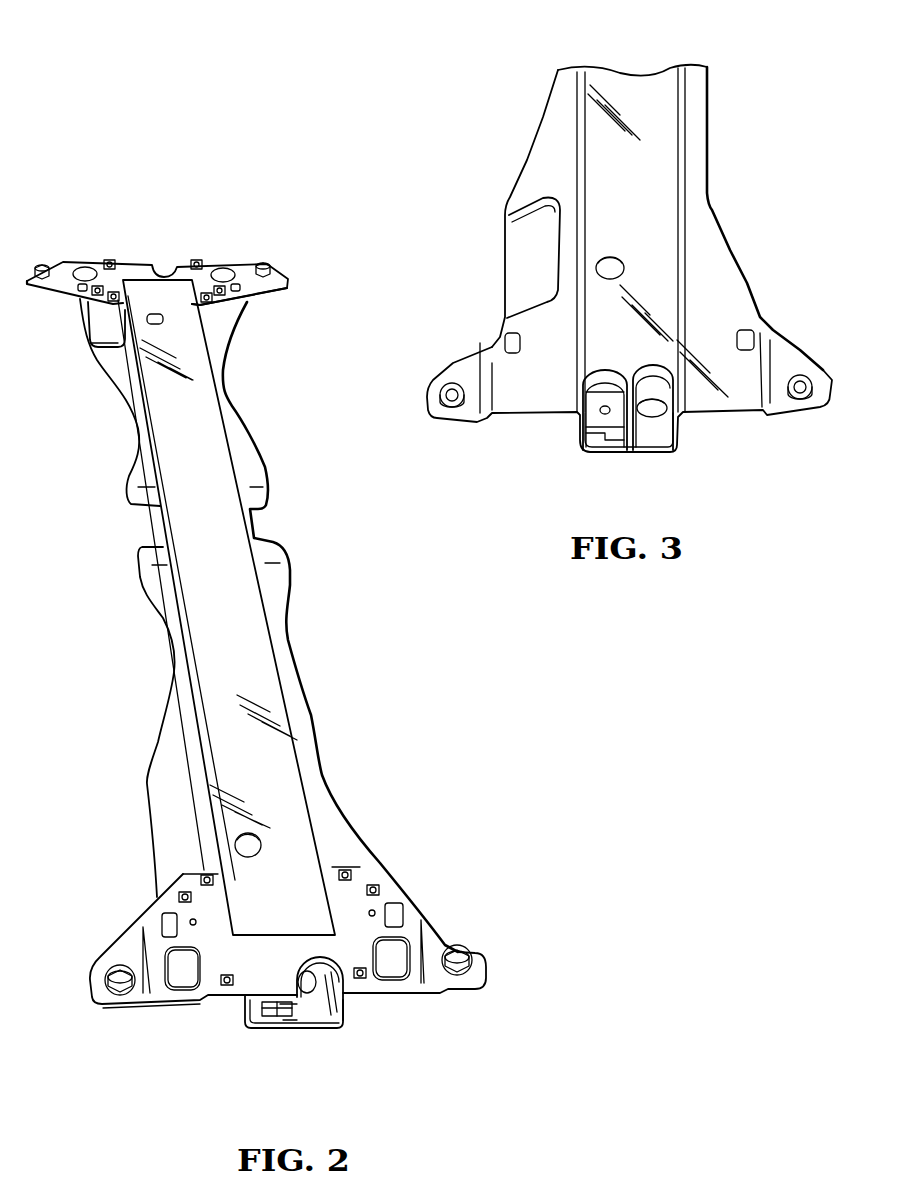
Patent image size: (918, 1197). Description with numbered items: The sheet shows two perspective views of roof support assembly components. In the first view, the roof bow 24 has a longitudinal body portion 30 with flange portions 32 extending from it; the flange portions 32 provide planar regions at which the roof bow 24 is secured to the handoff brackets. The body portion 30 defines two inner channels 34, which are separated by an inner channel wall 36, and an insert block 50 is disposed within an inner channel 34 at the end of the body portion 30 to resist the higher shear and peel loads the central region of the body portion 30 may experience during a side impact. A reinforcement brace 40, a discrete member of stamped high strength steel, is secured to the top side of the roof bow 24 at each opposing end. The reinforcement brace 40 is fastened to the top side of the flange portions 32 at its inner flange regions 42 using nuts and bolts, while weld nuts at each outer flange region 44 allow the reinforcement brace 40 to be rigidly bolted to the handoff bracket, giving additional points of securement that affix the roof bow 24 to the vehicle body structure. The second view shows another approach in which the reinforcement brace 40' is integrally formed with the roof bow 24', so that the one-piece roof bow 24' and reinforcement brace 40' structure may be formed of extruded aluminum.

In FIG. 2, the roof bow 24 is at (269, 625).
In FIG. 2, the body portion 30 is at (258, 652).
In FIG. 2, the flange portions 32 is at (208, 832).
In FIG. 2, the reinforcement brace 40 is at (258, 604).
In FIG. 2, the inner flange regions 42 is at (210, 908).
In FIG. 2, the outer flange region 44 is at (118, 950).
In FIG. 2, the inner channel wall 36 is at (320, 1017).
In FIG. 2, the inner channels 34 is at (307, 1013).
In FIG. 2, the insert block 50 is at (263, 1030).
In FIG. 3, the roof bow 24' is at (657, 238).
In FIG. 3, the reinforcement brace 40' is at (629, 349).